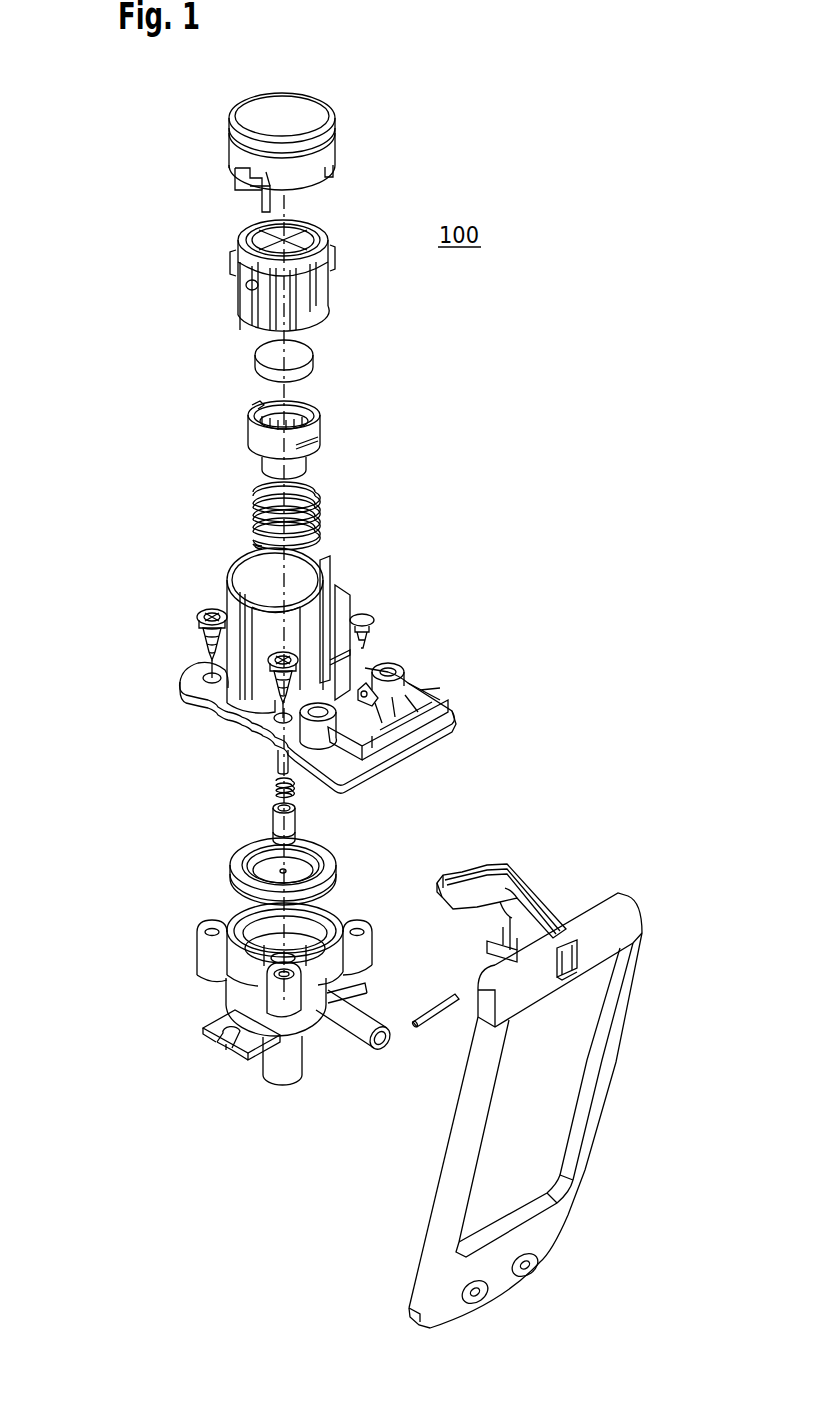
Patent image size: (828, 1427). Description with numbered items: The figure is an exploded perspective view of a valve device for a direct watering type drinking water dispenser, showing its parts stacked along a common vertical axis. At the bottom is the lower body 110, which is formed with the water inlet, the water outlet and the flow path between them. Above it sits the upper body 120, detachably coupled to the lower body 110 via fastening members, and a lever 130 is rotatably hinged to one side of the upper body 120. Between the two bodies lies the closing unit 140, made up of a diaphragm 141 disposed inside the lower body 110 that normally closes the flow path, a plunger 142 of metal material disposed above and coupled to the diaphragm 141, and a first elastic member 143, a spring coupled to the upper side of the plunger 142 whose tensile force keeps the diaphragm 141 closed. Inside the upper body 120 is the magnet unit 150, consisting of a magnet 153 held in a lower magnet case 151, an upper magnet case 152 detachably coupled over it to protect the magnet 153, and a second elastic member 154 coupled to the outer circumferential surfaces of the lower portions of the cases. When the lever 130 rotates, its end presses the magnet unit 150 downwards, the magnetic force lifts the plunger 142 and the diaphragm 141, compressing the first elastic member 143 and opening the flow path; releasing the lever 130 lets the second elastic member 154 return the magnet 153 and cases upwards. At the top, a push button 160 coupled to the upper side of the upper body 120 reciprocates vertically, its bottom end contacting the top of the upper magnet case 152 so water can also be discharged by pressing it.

The lower body 110 is at (198, 999).
The upper body 120 is at (172, 656).
The lever 130 is at (607, 1078).
The closing unit 140 is at (155, 778).
The diaphragm 141 is at (232, 878).
The plunger 142 is at (277, 823).
The first elastic member 143 is at (273, 787).
The magnet unit 150 is at (134, 305).
The lower magnet case 151 is at (250, 438).
The upper magnet case 152 is at (243, 292).
The magnet 153 is at (255, 357).
The second elastic member 154 is at (255, 511).
The push button 160 is at (224, 151).